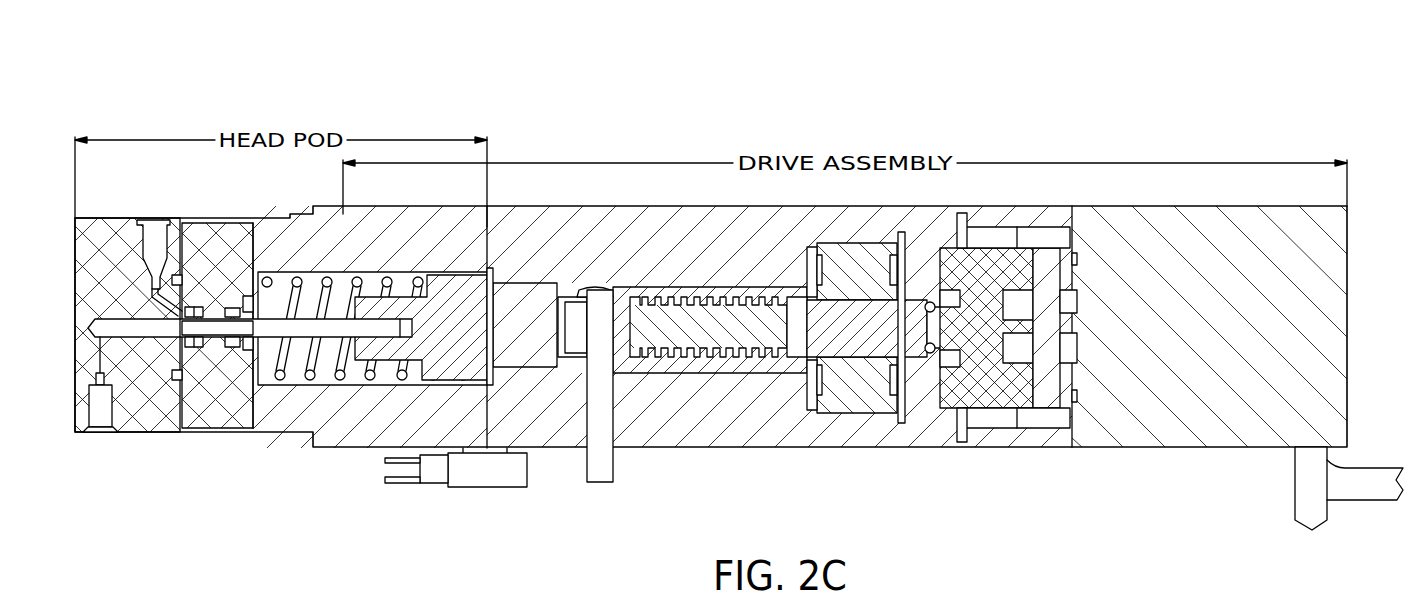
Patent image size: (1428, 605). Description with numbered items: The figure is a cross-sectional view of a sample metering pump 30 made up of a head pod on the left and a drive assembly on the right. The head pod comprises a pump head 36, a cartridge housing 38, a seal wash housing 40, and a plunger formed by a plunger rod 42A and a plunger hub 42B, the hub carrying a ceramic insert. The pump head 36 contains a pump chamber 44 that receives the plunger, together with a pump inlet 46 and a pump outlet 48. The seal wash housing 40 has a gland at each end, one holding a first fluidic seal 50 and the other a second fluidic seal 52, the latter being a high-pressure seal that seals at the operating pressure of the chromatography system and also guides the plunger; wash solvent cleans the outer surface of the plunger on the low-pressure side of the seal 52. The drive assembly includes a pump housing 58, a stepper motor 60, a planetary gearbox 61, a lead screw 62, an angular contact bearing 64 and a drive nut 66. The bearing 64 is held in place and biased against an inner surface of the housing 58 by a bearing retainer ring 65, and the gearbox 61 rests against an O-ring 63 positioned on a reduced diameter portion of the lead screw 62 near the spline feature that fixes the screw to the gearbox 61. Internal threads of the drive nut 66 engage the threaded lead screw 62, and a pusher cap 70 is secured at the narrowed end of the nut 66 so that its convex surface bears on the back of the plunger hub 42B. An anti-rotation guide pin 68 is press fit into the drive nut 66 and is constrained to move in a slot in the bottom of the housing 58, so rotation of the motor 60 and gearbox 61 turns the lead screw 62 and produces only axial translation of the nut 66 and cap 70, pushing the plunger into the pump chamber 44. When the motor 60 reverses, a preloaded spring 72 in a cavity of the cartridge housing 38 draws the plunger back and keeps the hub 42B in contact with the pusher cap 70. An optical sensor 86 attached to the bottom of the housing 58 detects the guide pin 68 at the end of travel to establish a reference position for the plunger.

The sample metering pump 30 is at (153, 59).
The pump head 36 is at (150, 433).
The cartridge housing 38 is at (325, 449).
The seal wash housing 40 is at (235, 428).
The plunger rod 42A is at (225, 333).
The plunger hub 42B is at (427, 337).
The pump chamber 44 is at (120, 320).
The pump inlet 46 is at (101, 446).
The pump outlet 48 is at (157, 212).
The first fluidic seal 50 is at (247, 297).
The second fluidic seal 52 is at (187, 342).
The pump housing 58 is at (772, 448).
The stepper motor 60 is at (1200, 448).
The planetary gearbox 61 is at (1000, 404).
The lead screw 62 is at (748, 313).
The O-ring 63 is at (925, 348).
The angular contact bearing 64 is at (862, 411).
The bearing retainer ring 65 is at (903, 420).
The drive nut 66 is at (695, 292).
The anti-rotation guide pin 68 is at (613, 475).
The pusher cap 70 is at (558, 295).
The spring 72 is at (290, 295).
The optical sensor 86 is at (483, 488).